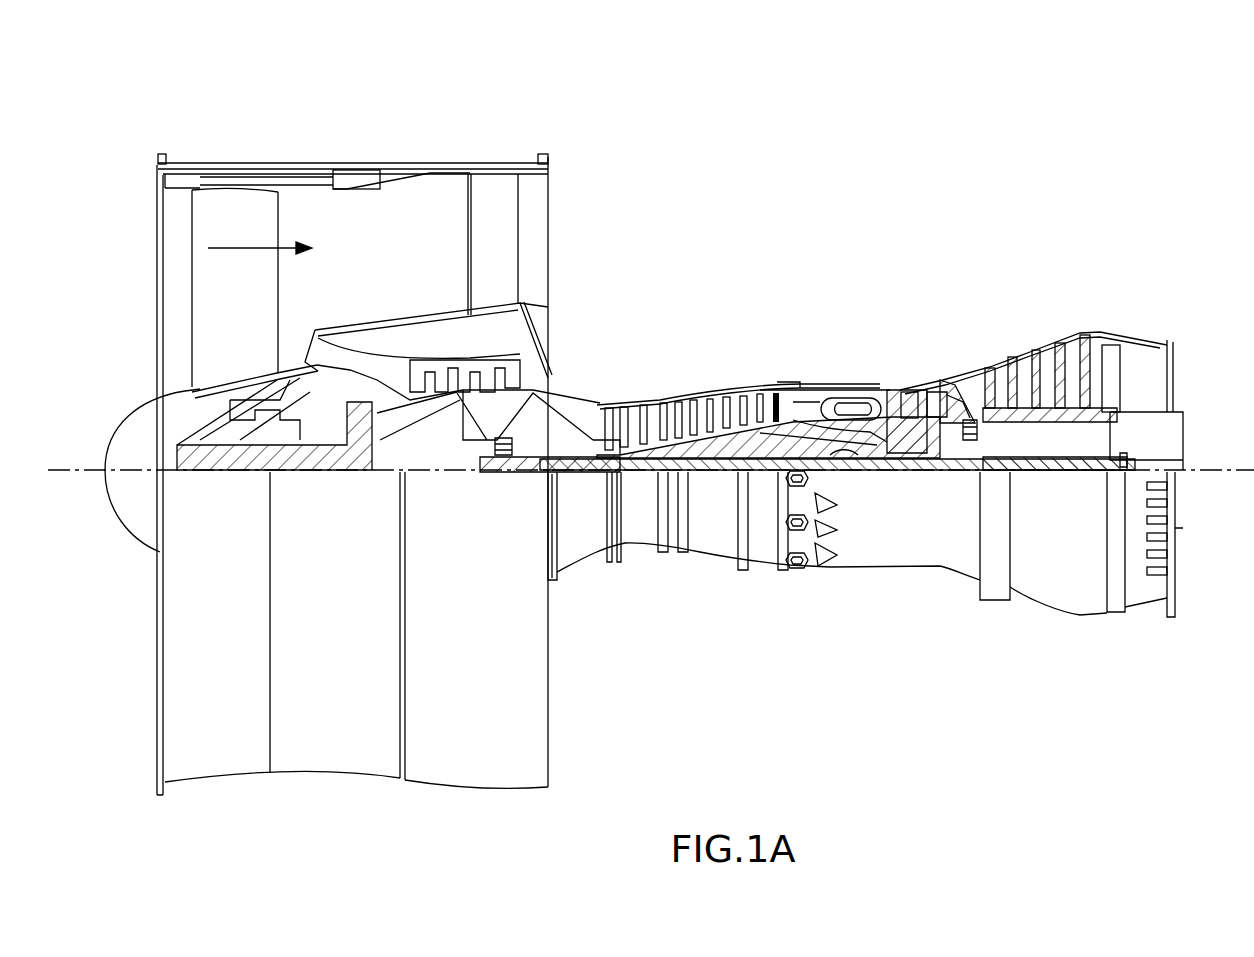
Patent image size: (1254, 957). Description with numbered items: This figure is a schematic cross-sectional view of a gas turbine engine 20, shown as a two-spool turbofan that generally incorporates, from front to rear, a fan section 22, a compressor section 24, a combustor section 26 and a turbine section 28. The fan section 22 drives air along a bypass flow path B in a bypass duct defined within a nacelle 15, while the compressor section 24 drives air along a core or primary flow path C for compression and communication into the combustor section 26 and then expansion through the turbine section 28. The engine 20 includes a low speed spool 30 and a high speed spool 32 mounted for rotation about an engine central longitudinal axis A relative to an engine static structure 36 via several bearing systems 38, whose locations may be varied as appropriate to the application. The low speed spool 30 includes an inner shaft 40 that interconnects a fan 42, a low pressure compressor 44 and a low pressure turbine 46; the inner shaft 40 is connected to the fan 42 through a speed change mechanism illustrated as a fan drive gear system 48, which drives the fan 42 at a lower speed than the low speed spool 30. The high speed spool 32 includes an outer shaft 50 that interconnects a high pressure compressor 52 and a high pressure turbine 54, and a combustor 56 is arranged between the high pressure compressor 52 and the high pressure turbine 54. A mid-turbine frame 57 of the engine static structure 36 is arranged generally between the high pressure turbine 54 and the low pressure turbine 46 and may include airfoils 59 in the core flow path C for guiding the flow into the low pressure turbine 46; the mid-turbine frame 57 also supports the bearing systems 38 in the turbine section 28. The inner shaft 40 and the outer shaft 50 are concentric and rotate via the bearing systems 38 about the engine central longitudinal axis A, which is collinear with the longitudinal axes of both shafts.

The gas turbine engine 20 is at (865, 178).
The fan section 22 is at (272, 150).
The nacelle 15 is at (350, 178).
The fan 42 is at (245, 284).
The compressor section 24 is at (592, 362).
The combustor section 26 is at (838, 352).
The turbine section 28 is at (998, 316).
The low speed spool 30 is at (718, 472).
The high speed spool 32 is at (773, 420).
The engine static structure 36 is at (762, 540).
The bearing systems 38 is at (503, 472).
The inner shaft 40 is at (573, 472).
The low pressure compressor 44 is at (480, 367).
The low pressure turbine 46 is at (1045, 356).
The fan drive gear system 48 is at (363, 472).
The outer shaft 50 is at (845, 455).
The high pressure compressor 52 is at (722, 398).
The high pressure turbine 54 is at (910, 395).
The combustor 56 is at (858, 408).
The mid-turbine frame 57 is at (958, 376).
The airfoils 59 is at (960, 400).
The engine central longitudinal axis A is at (1228, 468).
The bypass flow path B is at (241, 246).
The core flow path C is at (338, 354).